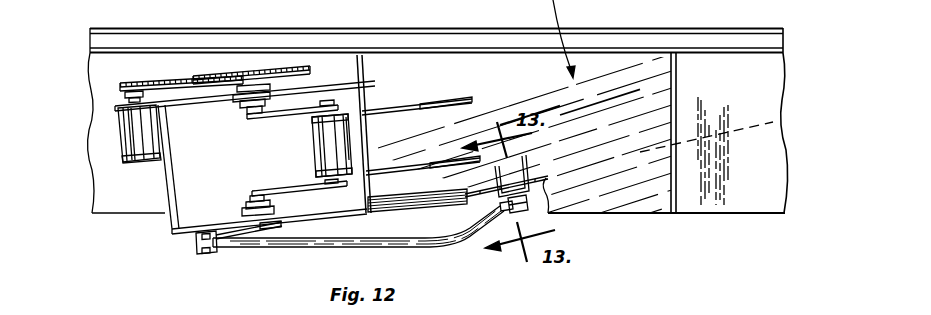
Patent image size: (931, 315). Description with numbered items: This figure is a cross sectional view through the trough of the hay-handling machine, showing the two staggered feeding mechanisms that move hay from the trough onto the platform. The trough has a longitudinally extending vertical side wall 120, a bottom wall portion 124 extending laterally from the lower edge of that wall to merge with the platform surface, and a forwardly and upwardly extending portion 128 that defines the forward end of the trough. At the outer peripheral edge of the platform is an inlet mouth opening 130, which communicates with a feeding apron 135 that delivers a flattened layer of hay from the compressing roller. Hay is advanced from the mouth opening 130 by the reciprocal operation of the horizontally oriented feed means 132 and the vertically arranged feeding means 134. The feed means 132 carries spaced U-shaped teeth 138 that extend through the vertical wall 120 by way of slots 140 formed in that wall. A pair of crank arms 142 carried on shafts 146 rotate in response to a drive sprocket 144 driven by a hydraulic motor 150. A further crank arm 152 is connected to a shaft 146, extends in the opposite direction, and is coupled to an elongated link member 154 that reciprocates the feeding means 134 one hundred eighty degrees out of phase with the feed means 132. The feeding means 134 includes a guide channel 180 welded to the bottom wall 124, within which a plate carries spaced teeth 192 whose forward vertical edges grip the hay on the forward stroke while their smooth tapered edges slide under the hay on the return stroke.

The vertical side wall 120 is at (366, 78).
The feed means 132 is at (427, 88).
The U-shaped teeth 138 is at (445, 104).
The slots 140 is at (366, 108).
The forwardly and upwardly extending portion 128 is at (528, 95).
The inlet mouth opening 130 is at (689, 95).
The drive sprocket 144 is at (236, 76).
The crank arms 142 is at (267, 120).
The hydraulic motor 150 is at (124, 148).
The teeth 192 is at (532, 160).
The shafts 146 is at (278, 231).
The crank arm 152 is at (233, 245).
The elongated link member 154 is at (400, 247).
The bottom wall portion 124 is at (503, 212).
The guide channel 180 is at (533, 205).
The feeding apron 135 is at (623, 215).
The feeding means 134 is at (680, 314).